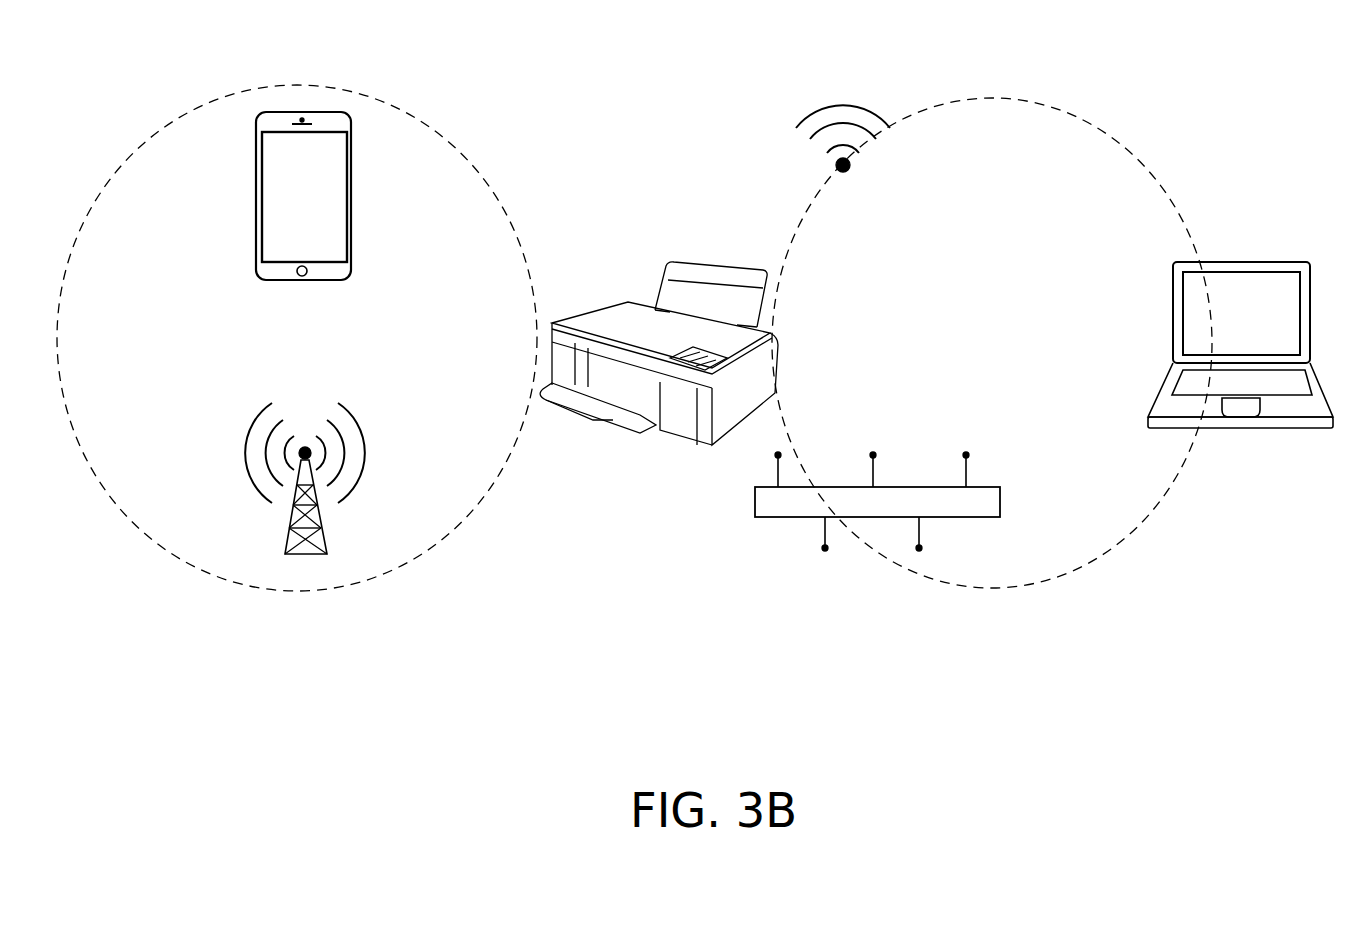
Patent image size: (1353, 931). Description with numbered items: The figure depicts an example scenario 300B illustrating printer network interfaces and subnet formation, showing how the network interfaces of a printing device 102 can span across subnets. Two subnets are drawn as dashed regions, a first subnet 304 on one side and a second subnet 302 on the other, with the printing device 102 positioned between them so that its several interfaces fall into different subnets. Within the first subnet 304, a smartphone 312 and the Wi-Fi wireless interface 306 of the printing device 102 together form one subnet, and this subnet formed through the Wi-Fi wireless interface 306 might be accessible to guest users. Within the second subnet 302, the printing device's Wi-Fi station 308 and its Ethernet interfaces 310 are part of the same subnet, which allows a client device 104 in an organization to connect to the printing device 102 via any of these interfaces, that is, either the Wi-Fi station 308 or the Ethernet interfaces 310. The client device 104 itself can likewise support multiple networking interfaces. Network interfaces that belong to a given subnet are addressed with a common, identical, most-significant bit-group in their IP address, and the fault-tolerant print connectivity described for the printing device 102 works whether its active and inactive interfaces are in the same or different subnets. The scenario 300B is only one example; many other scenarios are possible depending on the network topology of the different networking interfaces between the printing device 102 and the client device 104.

The example scenario 300B is at (835, 661).
The printing device 102 is at (727, 262).
The client device 104 is at (1247, 262).
The subnet 302 is at (1010, 350).
The subnet 304 is at (319, 362).
The Wi-Fi wireless interface 306 is at (327, 542).
The Wi-Fi station 308 is at (843, 105).
The Ethernet interfaces 310 is at (780, 517).
The smartphone 312 is at (348, 214).